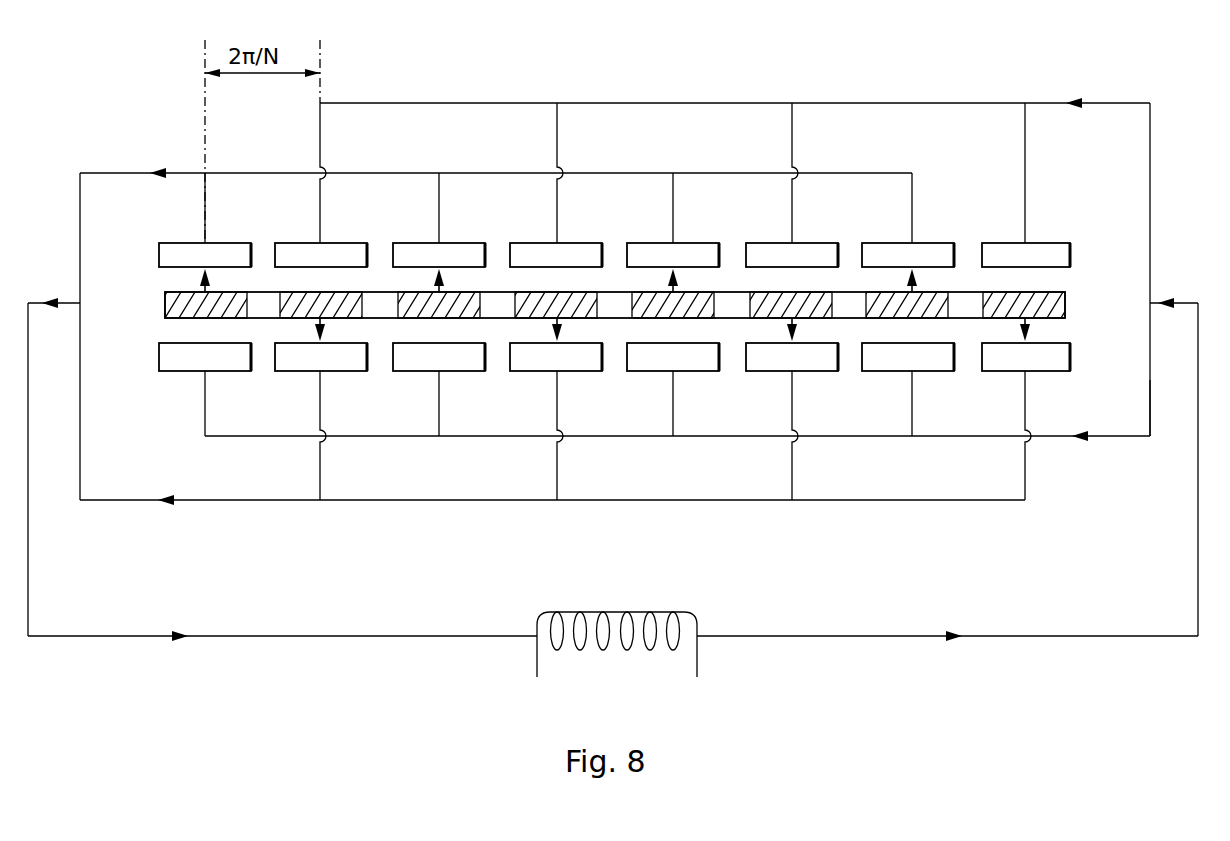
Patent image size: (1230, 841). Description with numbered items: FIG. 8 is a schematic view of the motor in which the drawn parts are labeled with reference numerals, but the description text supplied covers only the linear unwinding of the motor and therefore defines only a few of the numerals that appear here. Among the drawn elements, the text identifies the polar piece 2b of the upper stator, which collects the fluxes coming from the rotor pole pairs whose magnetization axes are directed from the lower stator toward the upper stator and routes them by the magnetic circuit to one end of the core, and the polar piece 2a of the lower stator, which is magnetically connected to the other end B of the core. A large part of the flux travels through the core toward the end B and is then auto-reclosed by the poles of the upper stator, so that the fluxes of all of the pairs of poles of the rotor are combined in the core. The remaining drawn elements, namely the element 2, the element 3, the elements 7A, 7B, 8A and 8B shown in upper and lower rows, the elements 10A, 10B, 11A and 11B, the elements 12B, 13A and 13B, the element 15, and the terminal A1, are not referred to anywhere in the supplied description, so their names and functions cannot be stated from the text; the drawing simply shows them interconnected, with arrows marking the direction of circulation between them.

The excitation coil 2 is at (610, 612).
The polar piece of the lower stator 2a is at (677, 465).
The polar piece of the upper stator 2b is at (496, 151).
The supply conductor 3 is at (286, 636).
The upper electrode of first kind 7A is at (329, 254).
The lower electrode of first kind 7B is at (346, 360).
The upper electrode of second kind 8A is at (172, 250).
The lower electrode of second kind 8B is at (176, 360).
The upper bus conductor 10A is at (657, 103).
The lower bus conductor 10B is at (372, 500).
The upper bus conductor 11A is at (463, 173).
The lower bus conductor 11B is at (619, 437).
The connecting conductor 12B is at (1150, 234).
The connecting conductor 13A is at (80, 246).
The connecting conductor 13B is at (1150, 402).
The segmented conductor strip 15 is at (381, 254).
The terminal A1 is at (165, 304).
The end of the core B is at (1150, 303).